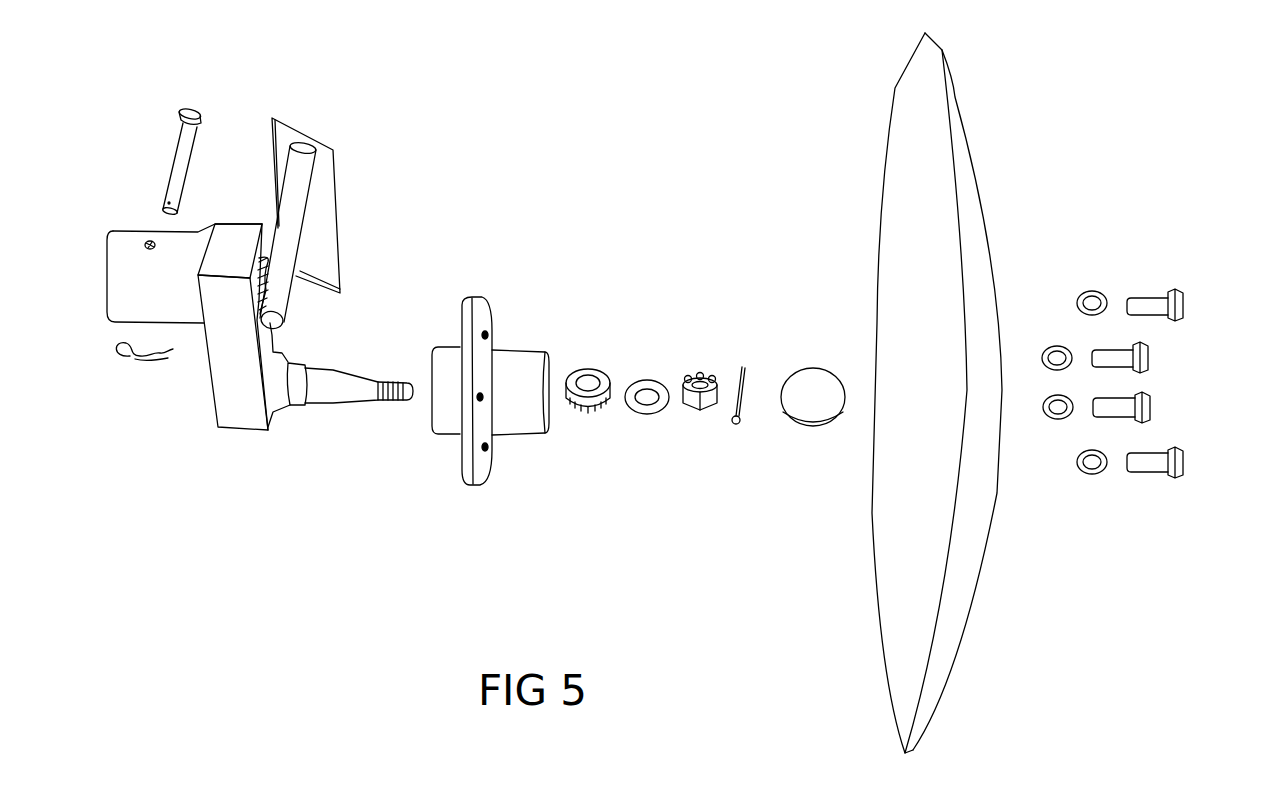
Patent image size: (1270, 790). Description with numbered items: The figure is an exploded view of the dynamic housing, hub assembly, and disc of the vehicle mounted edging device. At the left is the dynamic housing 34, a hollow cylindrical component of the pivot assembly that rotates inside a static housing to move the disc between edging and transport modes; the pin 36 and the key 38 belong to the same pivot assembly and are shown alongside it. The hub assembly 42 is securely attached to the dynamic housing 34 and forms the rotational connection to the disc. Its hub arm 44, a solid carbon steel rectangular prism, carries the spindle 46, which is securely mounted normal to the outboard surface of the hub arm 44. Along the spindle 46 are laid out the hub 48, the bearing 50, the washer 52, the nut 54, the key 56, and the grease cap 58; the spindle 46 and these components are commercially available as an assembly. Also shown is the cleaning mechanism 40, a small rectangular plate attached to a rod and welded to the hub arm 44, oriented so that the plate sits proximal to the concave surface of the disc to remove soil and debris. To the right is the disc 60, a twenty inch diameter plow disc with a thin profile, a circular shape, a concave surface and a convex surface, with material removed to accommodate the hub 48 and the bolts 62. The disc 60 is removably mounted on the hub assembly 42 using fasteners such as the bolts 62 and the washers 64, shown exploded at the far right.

The dynamic housing 34 is at (125, 230).
The pin 36 is at (173, 148).
The key 38 is at (103, 348).
The cleaning mechanism 40 is at (303, 122).
The hub assembly 42 is at (397, 338).
The hub arm 44 is at (233, 435).
The spindle 46 is at (363, 413).
The hub 48 is at (515, 320).
The bearing 50 is at (605, 360).
The washer 52 is at (667, 417).
The nut 54 is at (698, 370).
The key 56 is at (745, 403).
The grease cap 58 is at (808, 433).
The disc 60 is at (980, 267).
The bolts 62 is at (1198, 463).
The washers 64 is at (1067, 460).